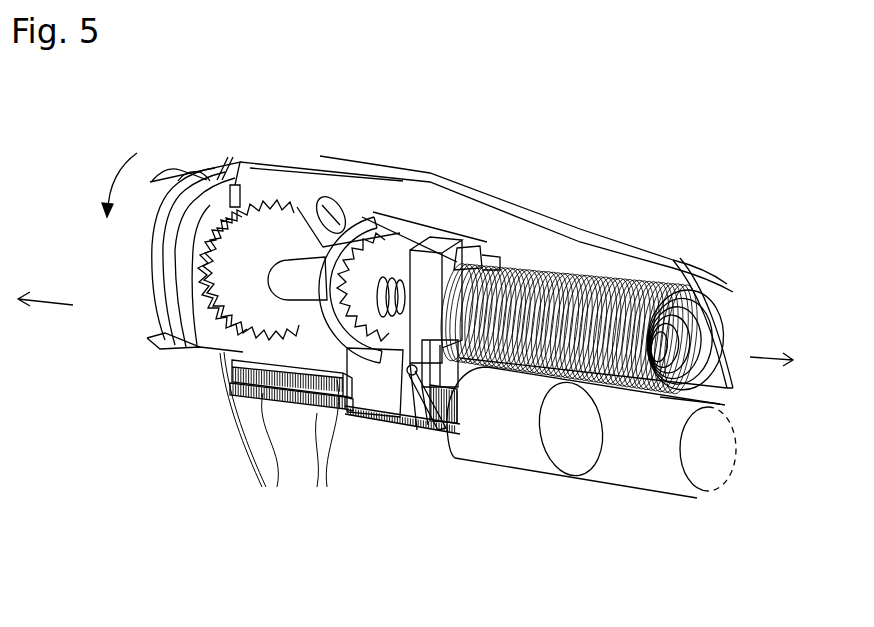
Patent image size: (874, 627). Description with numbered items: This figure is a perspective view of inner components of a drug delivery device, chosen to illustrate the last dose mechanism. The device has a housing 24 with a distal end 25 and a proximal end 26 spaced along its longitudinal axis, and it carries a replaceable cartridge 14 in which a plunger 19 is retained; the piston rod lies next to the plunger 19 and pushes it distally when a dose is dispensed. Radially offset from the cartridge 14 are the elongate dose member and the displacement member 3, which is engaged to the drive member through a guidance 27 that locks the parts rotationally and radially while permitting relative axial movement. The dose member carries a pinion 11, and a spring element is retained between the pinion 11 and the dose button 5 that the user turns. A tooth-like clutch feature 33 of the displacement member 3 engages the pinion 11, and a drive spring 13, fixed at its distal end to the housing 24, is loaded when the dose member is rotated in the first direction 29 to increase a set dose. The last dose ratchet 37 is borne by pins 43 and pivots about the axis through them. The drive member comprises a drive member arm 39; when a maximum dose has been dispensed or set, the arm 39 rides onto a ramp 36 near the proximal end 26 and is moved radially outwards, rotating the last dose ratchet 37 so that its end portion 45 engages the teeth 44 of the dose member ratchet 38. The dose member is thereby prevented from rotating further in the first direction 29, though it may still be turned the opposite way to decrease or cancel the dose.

The displacement member 3 is at (376, 199).
The dose button 5 is at (174, 178).
The pinion 11 is at (270, 222).
The drive spring 13 is at (652, 283).
The cartridge 14 is at (700, 470).
The plunger 19 is at (512, 453).
The housing 24 is at (598, 232).
The distal end 25 is at (774, 341).
The proximal end 26 is at (45, 279).
The guidance 27 is at (500, 253).
The first direction 29 is at (101, 185).
The clutch feature 33 is at (293, 203).
The ramp 36 is at (333, 313).
The last dose ratchet 37 is at (378, 407).
The dose member ratchet 38 is at (377, 313).
The drive member arm 39 is at (428, 410).
The pins 43 is at (428, 420).
The teeth 44 is at (348, 302).
The end portion 45 is at (352, 293).